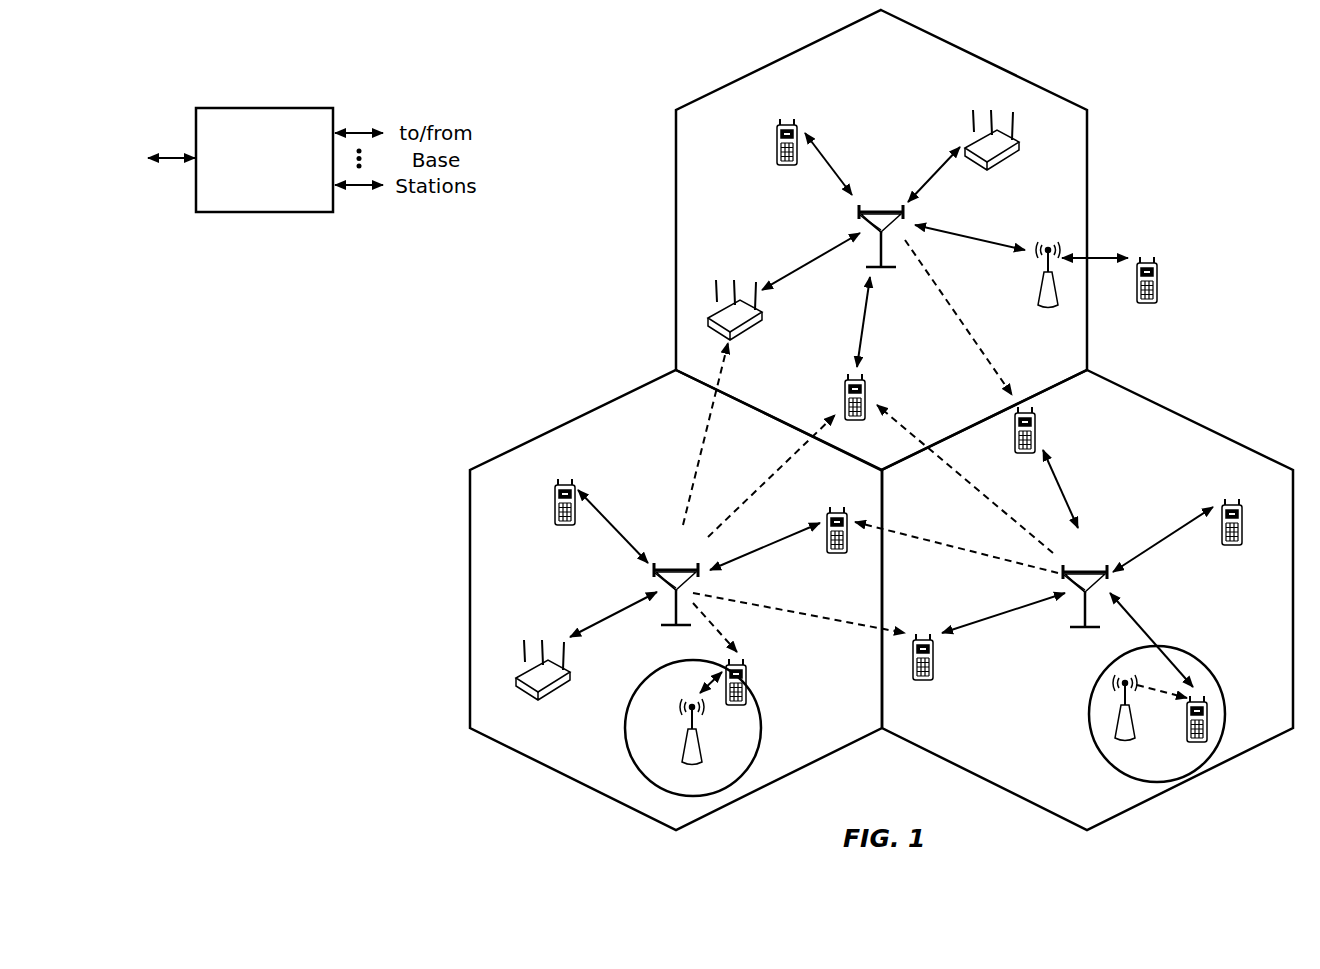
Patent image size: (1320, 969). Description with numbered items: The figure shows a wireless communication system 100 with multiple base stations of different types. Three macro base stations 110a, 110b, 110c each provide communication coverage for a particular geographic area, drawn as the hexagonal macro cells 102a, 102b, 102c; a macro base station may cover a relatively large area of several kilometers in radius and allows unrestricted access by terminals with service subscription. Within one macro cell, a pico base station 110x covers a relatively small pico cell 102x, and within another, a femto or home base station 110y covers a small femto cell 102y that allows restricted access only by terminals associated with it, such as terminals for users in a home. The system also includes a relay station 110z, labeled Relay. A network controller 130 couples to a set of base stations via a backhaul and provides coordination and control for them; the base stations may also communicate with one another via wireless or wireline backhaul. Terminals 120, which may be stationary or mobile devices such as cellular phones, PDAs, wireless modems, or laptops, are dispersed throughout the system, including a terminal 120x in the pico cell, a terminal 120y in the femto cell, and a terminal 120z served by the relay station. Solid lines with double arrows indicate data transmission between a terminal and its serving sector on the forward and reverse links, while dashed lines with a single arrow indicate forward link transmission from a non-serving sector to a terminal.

The wireless communication system 100 is at (1226, 77).
The macro cell 102a is at (987, 59).
The macro cell 102b is at (573, 419).
The macro cell 102c is at (1189, 419).
The pico cell 102x is at (646, 679).
The femto cell 102y is at (1191, 650).
The macro base station 110a is at (877, 207).
The macro base station 110b is at (672, 566).
The macro base station 110c is at (1086, 568).
The pico base station 110x is at (701, 752).
The femto base station 110y is at (1135, 727).
The relay station 110z is at (1040, 289).
The terminal 120 is at (777, 137).
The terminal 120x is at (747, 680).
The terminal 120y is at (1187, 735).
The terminal 120z is at (1158, 293).
The network controller 130 is at (258, 108).